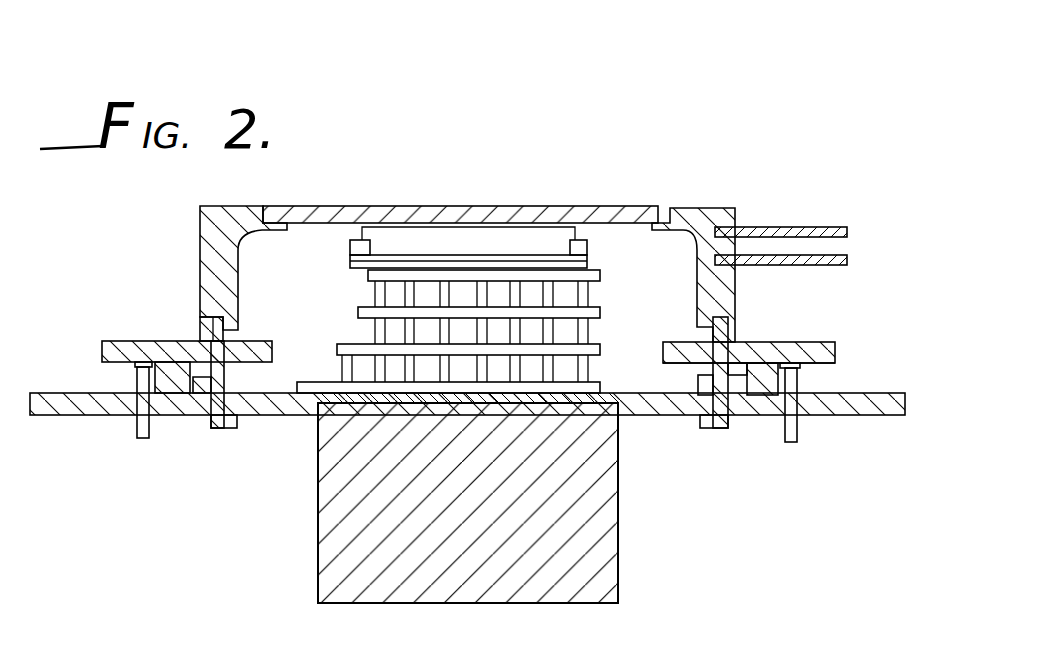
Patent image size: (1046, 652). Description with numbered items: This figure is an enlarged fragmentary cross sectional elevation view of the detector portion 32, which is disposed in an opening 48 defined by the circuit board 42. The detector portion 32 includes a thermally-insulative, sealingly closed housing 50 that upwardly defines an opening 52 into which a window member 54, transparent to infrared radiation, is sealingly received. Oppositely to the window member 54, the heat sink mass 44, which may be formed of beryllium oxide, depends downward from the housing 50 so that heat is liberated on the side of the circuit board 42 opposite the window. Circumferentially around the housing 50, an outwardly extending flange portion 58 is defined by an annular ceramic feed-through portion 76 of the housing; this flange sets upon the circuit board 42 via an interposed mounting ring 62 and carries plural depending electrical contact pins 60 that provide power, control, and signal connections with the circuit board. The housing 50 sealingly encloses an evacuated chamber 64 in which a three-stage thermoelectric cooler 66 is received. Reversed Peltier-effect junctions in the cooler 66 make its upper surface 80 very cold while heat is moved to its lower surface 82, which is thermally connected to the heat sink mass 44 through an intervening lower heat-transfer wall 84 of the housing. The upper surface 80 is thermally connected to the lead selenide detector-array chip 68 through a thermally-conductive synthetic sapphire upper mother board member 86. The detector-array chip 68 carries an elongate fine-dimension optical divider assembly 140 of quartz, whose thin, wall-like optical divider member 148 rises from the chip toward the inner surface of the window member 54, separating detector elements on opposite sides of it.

The detector portion 32 is at (172, 238).
The circuit board 42 is at (873, 395).
The heat sink mass 44 is at (610, 570).
The opening 48 is at (723, 425).
The housing 50 is at (262, 415).
The opening 52 is at (657, 212).
The window member 54 is at (517, 210).
The flange portion 58 is at (128, 341).
The electrical contact pins 60 is at (140, 380).
The mounting ring 62 is at (768, 368).
The evacuated chamber 64 is at (302, 292).
The multi-stage thermoelectric cooler 66 is at (612, 320).
The detector-array chip 68 is at (437, 257).
The ceramic feed-through portion 76 is at (675, 362).
The upper surface 80 is at (577, 267).
The lower surface 82 is at (345, 398).
The lower heat-transfer wall 84 is at (588, 405).
The upper mother board member 86 is at (382, 263).
The optical divider assembly 140 is at (490, 215).
The optical divider member 148 is at (562, 236).